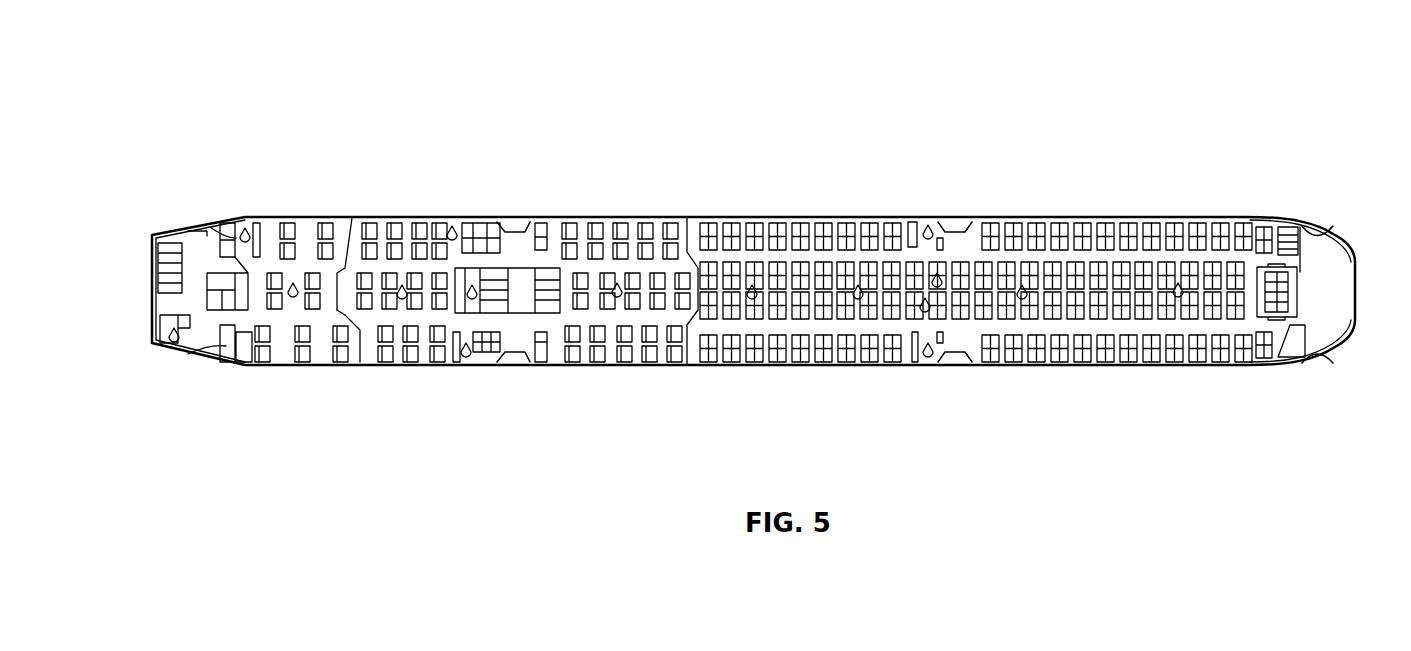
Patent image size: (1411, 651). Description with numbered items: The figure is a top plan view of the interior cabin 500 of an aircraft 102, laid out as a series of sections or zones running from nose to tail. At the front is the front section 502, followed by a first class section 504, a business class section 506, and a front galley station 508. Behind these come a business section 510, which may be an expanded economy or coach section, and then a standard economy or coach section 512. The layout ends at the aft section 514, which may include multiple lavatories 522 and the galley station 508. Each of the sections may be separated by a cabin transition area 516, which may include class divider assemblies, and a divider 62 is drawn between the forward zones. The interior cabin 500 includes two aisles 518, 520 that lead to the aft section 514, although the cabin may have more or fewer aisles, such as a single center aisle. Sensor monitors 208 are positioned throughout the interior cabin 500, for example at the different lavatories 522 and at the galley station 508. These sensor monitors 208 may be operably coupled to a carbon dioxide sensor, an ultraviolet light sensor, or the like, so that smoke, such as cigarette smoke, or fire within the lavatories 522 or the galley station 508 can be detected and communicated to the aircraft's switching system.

The interior cabin 500 is at (297, 122).
The aircraft 102 is at (1294, 414).
The sensor monitor 208 is at (294, 284).
The front section 502 is at (215, 379).
The first class section 504 is at (323, 369).
The cabin partition 62 is at (376, 369).
The business class section 506 is at (383, 216).
The front galley station 508 is at (516, 369).
The business section 510 is at (613, 369).
The standard economy or coach section 512 is at (763, 217).
The aft section 514 is at (1332, 217).
The cabin transition area 516 is at (229, 215).
The aisle 518 is at (1117, 261).
The aisle 520 is at (1135, 323).
The lavatory 522 is at (456, 190).